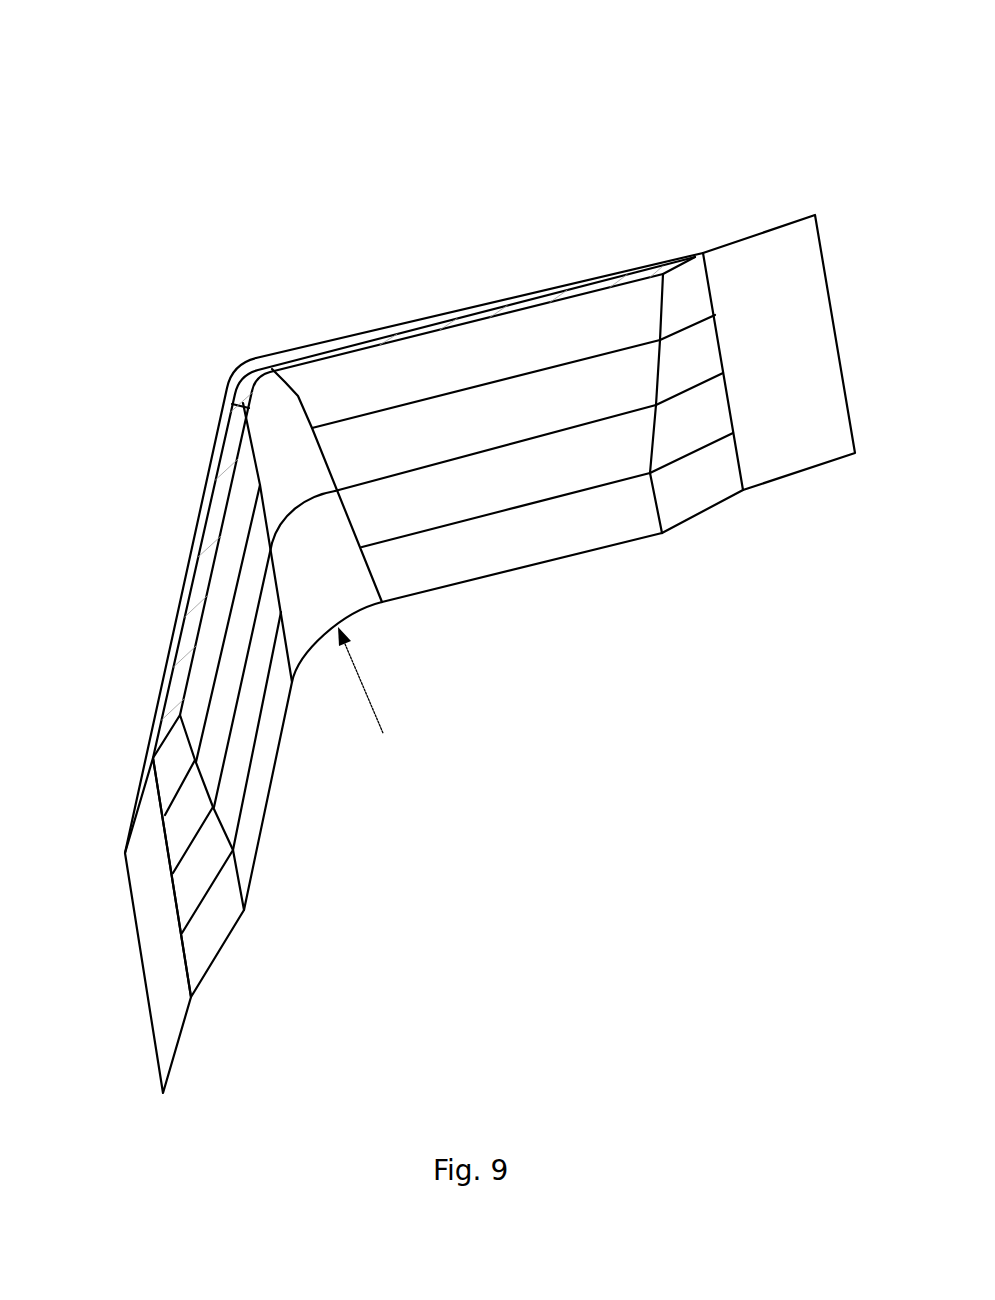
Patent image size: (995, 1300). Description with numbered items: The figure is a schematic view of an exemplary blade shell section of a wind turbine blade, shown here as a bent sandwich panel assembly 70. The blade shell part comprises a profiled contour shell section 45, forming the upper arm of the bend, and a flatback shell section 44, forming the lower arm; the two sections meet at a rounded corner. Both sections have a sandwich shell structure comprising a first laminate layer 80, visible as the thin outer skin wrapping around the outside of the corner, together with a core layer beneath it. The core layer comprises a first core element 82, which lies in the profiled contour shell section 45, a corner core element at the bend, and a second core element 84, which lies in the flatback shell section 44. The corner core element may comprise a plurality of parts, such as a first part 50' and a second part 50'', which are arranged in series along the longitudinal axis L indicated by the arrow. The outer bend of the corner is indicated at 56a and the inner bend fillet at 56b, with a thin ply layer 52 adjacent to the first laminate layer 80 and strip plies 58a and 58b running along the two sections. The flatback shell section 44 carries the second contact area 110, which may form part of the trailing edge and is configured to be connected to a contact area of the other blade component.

The composite bracket assembly 70 is at (281, 126).
The profiled contour shell section 45 is at (425, 250).
The first laminate layer 80 is at (592, 279).
The outer bend corner 56a is at (247, 390).
The second ply layer 52 is at (312, 428).
The first strip plies 58a is at (295, 384).
The second strip plies 58b is at (251, 431).
The first part of corner core element 50' is at (297, 508).
The second part of corner core element 50'' is at (270, 460).
The inner bend fillet 56b is at (358, 617).
The first core element 82 is at (582, 535).
The second core element 84 is at (250, 808).
The longitudinal axis L is at (380, 717).
The flatback shell section 44 is at (131, 577).
The second contact area 110 is at (124, 657).